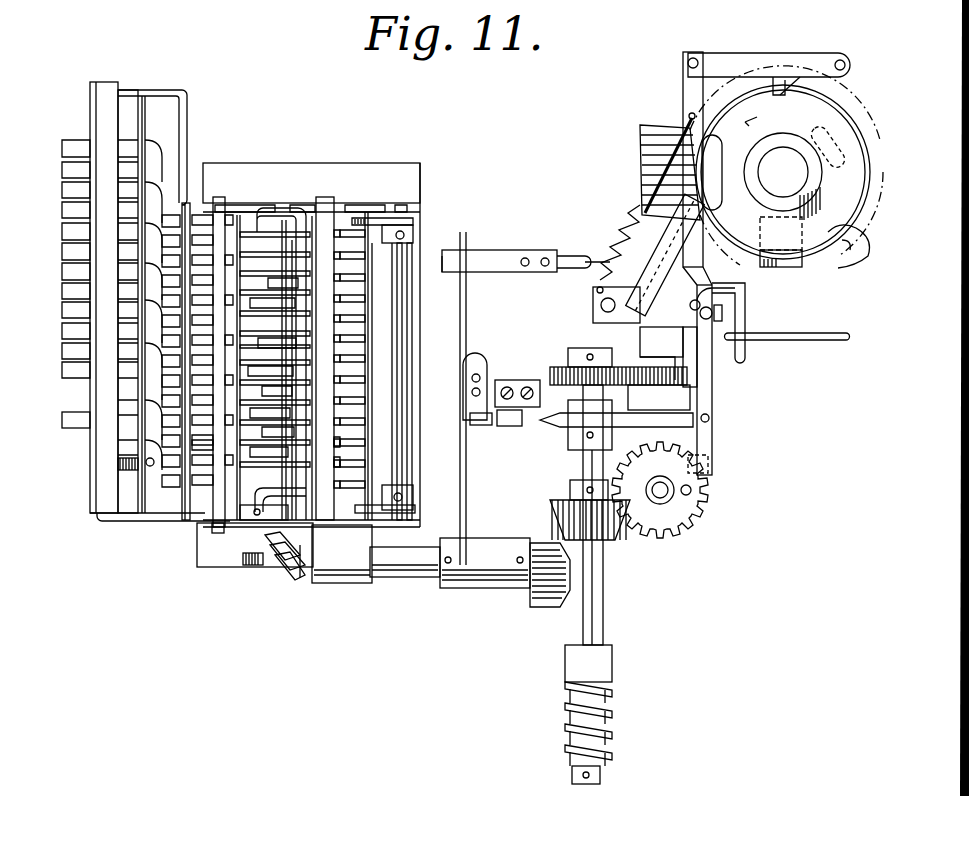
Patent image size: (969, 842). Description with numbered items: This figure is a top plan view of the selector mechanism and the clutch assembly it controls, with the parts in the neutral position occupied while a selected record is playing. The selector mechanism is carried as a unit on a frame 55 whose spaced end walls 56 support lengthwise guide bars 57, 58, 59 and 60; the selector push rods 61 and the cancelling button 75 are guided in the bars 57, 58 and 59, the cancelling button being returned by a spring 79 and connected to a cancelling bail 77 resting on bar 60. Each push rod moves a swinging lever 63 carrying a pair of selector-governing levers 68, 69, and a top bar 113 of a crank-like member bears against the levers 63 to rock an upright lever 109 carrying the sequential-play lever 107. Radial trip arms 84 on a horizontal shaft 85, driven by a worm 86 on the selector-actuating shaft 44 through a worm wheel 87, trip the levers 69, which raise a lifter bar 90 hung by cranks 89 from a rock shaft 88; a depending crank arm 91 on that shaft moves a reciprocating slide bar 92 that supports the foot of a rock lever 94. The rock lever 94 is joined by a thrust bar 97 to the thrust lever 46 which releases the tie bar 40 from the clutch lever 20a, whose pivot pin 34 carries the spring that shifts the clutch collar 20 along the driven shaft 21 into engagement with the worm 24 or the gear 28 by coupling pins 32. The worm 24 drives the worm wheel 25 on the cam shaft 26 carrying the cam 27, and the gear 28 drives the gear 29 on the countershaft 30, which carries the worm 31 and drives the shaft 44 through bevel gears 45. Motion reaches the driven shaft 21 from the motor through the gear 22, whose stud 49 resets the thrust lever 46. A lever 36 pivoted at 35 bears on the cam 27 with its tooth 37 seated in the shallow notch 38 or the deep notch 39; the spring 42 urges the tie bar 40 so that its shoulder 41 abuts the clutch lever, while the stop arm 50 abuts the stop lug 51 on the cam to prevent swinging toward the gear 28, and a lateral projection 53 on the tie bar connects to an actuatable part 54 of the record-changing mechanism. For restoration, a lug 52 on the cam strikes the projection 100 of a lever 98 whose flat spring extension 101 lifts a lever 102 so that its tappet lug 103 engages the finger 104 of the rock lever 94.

The guide bar 57 is at (100, 97).
The guide bar 58 is at (140, 116).
The guide bar 59 is at (195, 205).
The selector elements or push rods 61 is at (65, 232).
The cancelling button or element 75 is at (70, 422).
The spring 79 is at (128, 465).
The frame 55 is at (128, 523).
The vertically-swinging levers 63 is at (200, 440).
The radial trip arms 84 is at (268, 270).
The horizontal shaft 85 is at (286, 195).
The end walls 56 is at (416, 177).
The guide bar 60 is at (325, 215).
The cranks 89 is at (381, 218).
The selector-governing lever 69 is at (360, 336).
The lifter bar 90 is at (372, 301).
The reciprocating slide bar 92 is at (346, 435).
The selector-governing lever 68 is at (346, 458).
The lever 107 is at (355, 492).
The depending crank arm 91 is at (470, 380).
The rock shaft 88 is at (436, 245).
The flat spring extension 101 is at (490, 258).
The lever 102 is at (466, 280).
The lever 98 is at (588, 262).
The pivot pin 34 is at (600, 303).
The stop arm 50 is at (665, 255).
The worm 24 is at (642, 158).
The spring 42 is at (642, 212).
The cam shaft 26 is at (783, 172).
The worm wheel 25 is at (698, 103).
The cam 27 is at (830, 190).
The stop lug 51 is at (713, 165).
The lug 52 is at (838, 143).
The horizontally-swinging lever 36 is at (735, 53).
The pivot 35 is at (843, 60).
The tooth-like projection 37 is at (795, 77).
The shallow notch 38 is at (780, 77).
The tie bar or link 40 is at (683, 104).
The lateral projection 100 is at (797, 262).
The deep notch 39 is at (848, 252).
The thrust member or rock lever 46 is at (712, 455).
The shoulder 41 is at (737, 290).
The clutch lever 20a is at (722, 318).
The lateral projection 53 is at (746, 355).
The actuatable part 54 is at (832, 341).
The clutch collar 20 is at (666, 358).
The driven shaft 21 is at (658, 358).
The gear 28 is at (680, 375).
The gear 29 is at (562, 375).
The coupling pins 32 is at (659, 399).
The rock lever 94 is at (545, 413).
The finger 104 is at (510, 426).
The tappet lug 103 is at (478, 426).
The thrust bar or link 97 is at (580, 432).
The bevel gears 45 is at (563, 532).
The countershaft 30 is at (604, 580).
The worm 31 is at (613, 722).
The gear 22 is at (683, 530).
The stud 49 is at (690, 493).
The selector-actuating shaft 44 is at (405, 578).
The cancelling bail 77 is at (342, 554).
The top bar 113 is at (216, 530).
The upright lever 109 is at (218, 534).
The worm wheel 87 is at (250, 566).
The worm 86 is at (288, 580).